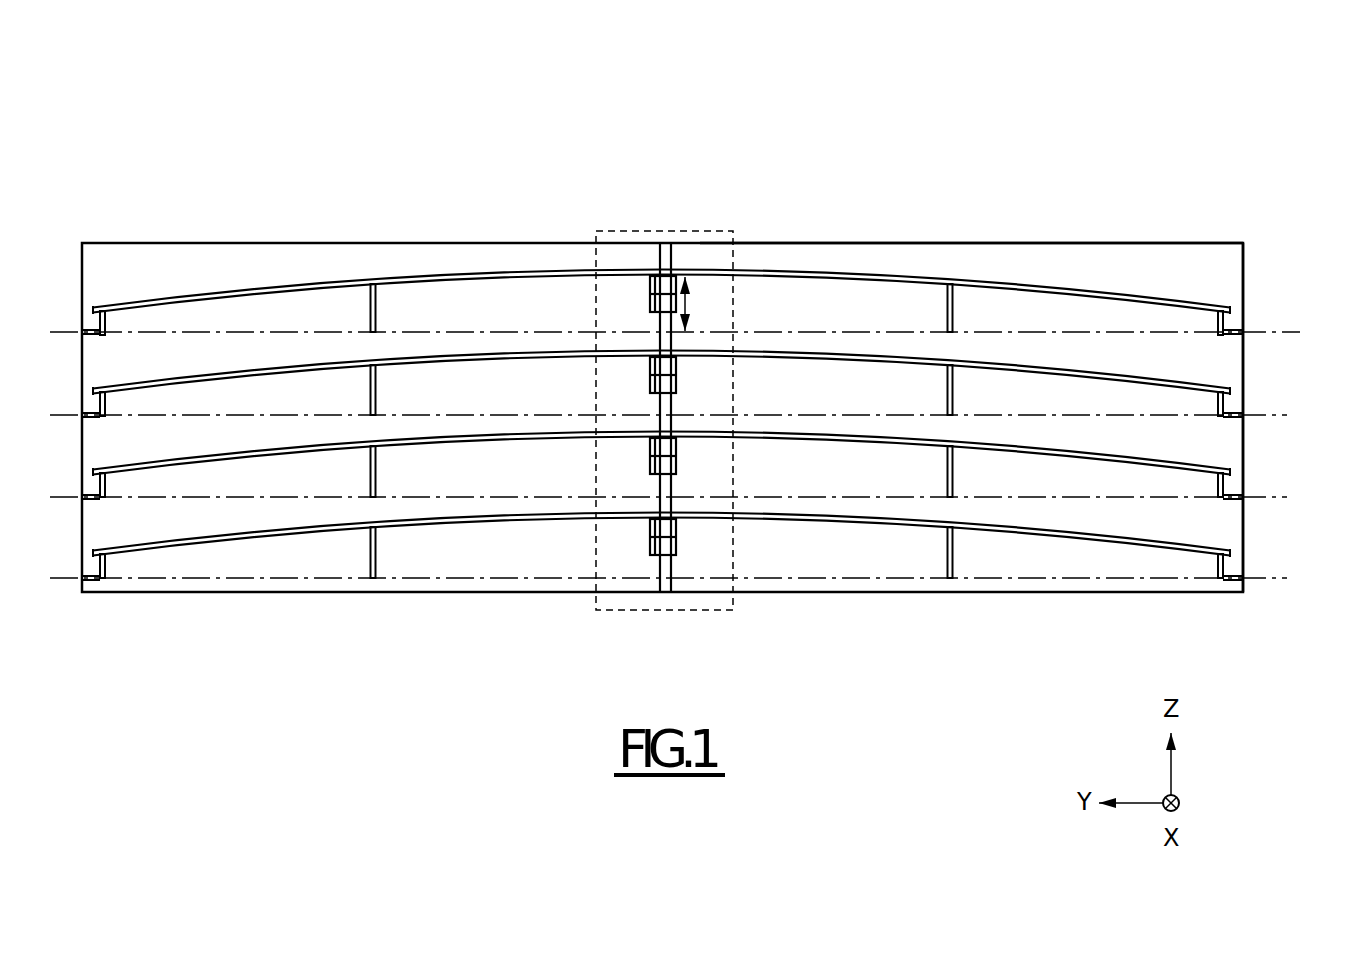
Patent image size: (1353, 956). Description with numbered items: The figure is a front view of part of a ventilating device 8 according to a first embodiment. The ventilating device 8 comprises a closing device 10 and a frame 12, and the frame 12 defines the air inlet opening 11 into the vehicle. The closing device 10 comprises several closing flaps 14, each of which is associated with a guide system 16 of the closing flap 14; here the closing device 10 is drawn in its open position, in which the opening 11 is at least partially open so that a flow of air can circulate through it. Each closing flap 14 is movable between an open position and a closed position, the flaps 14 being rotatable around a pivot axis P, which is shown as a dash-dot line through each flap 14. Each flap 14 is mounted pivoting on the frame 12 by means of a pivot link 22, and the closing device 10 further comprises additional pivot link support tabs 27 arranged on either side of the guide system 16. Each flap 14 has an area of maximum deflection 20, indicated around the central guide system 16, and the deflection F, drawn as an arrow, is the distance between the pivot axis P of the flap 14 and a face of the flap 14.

The ventilating device 8 is at (766, 157).
The closing device 10 is at (448, 258).
The air inlet opening 11 is at (860, 305).
The frame 12 is at (1096, 243).
The closing flap 14 is at (1168, 288).
The guide system 16 is at (665, 248).
The area of maximum deflection 20 is at (596, 231).
The pivot link 22 is at (1248, 325).
The pivot link support tabs 27 is at (365, 392).
The pivot axis P is at (698, 434).
The deflection F is at (688, 302).